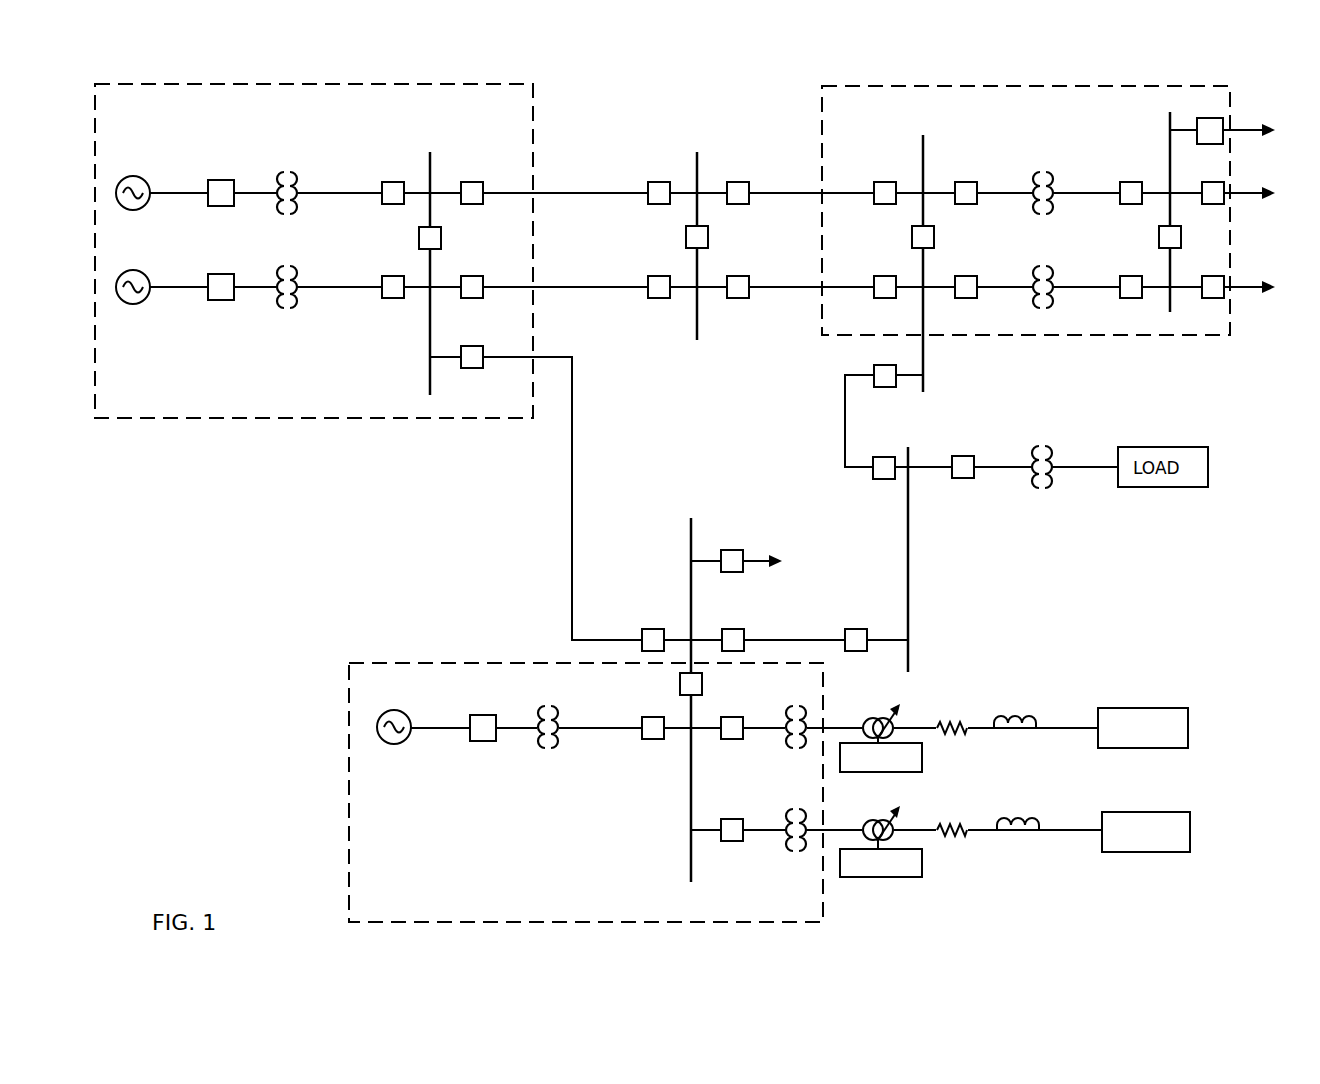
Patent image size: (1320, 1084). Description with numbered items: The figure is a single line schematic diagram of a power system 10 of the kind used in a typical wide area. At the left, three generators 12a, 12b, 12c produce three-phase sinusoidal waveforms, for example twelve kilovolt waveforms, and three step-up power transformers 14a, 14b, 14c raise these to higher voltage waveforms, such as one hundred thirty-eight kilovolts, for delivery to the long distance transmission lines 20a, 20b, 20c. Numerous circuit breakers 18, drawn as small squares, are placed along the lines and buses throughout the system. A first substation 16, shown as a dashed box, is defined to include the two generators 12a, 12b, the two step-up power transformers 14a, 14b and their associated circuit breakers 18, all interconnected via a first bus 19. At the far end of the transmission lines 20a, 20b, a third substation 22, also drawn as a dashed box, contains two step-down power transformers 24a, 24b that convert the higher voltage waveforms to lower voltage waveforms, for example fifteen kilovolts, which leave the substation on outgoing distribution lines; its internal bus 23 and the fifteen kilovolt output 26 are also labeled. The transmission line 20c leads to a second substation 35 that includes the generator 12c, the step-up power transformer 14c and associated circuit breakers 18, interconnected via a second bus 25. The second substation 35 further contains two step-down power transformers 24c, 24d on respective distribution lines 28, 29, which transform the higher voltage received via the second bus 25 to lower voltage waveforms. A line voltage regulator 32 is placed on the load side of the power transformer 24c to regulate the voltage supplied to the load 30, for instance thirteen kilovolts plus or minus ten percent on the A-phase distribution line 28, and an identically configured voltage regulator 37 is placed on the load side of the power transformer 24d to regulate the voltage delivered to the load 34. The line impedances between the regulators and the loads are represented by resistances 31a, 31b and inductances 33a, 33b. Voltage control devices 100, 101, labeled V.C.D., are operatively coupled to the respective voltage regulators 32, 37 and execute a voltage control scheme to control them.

The power system 10 is at (738, 98).
The generator 12a is at (146, 208).
The generator 12b is at (146, 302).
The generator 12c is at (402, 744).
The step-up power transformer 14a is at (282, 172).
The step-up power transformer 14b is at (285, 266).
The step-up power transformer 14c is at (546, 708).
The first substation 16 is at (538, 128).
The circuit breaker 18 is at (471, 205).
The first bus 19 is at (427, 158).
The transmission line 20a is at (600, 193).
The transmission line 20b is at (585, 287).
The transmission line 20c is at (603, 640).
The third substation 22 is at (1093, 86).
The bus 23 is at (923, 158).
The step-down power transformer 24a is at (1047, 173).
The step-down power transformer 24b is at (1047, 265).
The step-down power transformer 24c is at (795, 705).
The step-down power transformer 24d is at (797, 853).
The second bus 25 is at (693, 540).
The 15 kV output line 26 is at (1262, 133).
The distribution line 28 is at (973, 730).
The distribution line 29 is at (980, 833).
The load 30 is at (1188, 728).
The resistance 31a is at (940, 722).
The resistance 31b is at (945, 828).
The voltage regulator 32 is at (874, 721).
The inductance 33a is at (1020, 718).
The inductance 33b is at (1020, 820).
The load 34 is at (1190, 832).
The second substation 35 is at (440, 662).
The voltage regulator 37 is at (874, 823).
The voltage control device 100 is at (922, 757).
The voltage control device 101 is at (869, 877).